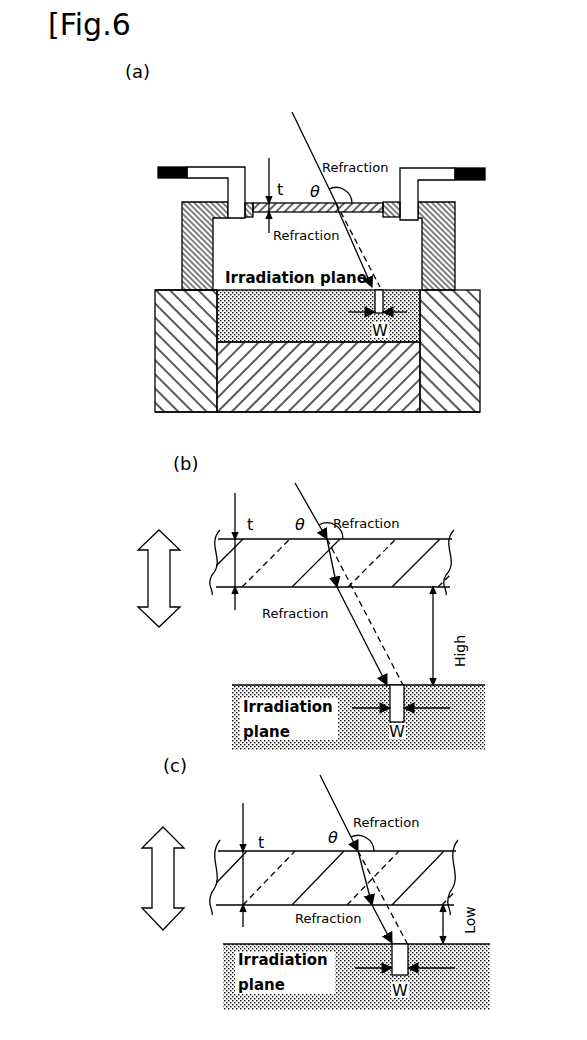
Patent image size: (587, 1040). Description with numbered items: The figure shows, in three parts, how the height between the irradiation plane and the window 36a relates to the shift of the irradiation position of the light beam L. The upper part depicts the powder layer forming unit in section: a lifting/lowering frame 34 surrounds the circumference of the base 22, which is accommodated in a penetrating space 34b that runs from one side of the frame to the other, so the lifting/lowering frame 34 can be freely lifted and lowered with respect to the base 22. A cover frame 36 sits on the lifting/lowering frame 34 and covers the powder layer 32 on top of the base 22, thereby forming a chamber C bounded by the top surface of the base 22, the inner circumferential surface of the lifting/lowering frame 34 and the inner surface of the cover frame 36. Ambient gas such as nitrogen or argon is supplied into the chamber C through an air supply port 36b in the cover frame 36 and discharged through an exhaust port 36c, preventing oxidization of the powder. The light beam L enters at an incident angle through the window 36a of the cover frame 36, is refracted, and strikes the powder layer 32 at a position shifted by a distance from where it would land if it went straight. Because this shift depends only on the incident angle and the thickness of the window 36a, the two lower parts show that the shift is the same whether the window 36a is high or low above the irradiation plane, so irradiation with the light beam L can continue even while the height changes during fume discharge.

The base 22 is at (395, 407).
The powder layer 32 is at (384, 312).
The lifting/lowering frame 34 is at (482, 332).
The penetrating space 34b is at (247, 308).
The cover frame 36 is at (455, 257).
The window 36a is at (373, 201).
The air supply port 36b is at (212, 167).
The exhaust port 36c is at (432, 166).
The chamber C is at (397, 242).
The light beam L is at (336, 199).